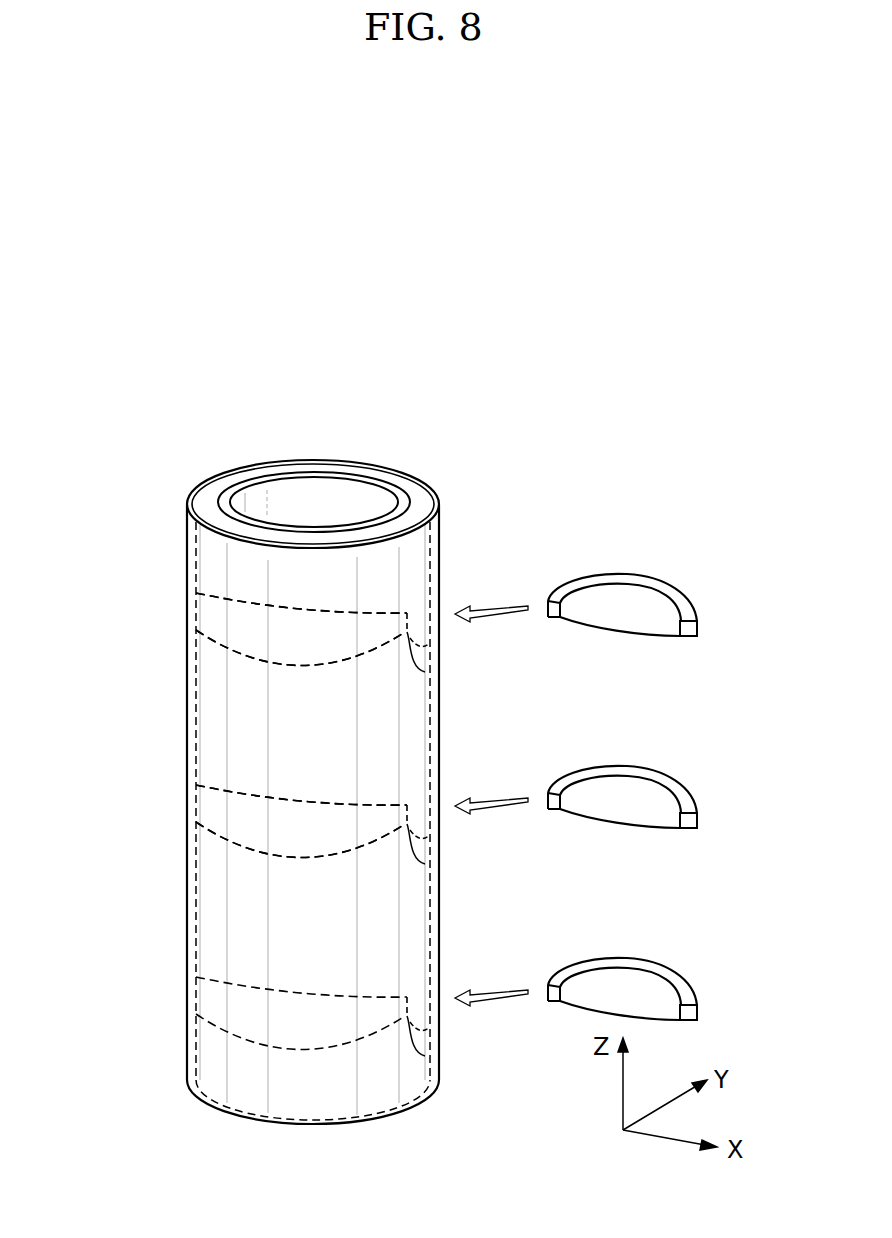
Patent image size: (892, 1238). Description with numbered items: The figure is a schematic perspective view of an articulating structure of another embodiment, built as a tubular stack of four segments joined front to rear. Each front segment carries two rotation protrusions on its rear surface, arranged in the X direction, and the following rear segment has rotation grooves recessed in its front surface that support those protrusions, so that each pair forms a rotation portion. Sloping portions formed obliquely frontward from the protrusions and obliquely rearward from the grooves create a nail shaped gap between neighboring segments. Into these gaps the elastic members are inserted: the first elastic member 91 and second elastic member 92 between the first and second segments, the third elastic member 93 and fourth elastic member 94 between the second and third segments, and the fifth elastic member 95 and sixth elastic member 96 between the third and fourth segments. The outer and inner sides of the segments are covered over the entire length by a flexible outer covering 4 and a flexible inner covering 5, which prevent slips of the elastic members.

The flexible outer covering 4 is at (441, 490).
The flexible inner covering 5 is at (372, 484).
The first elastic member 91 is at (233, 622).
The third elastic member 93 is at (262, 827).
The fifth elastic member 95 is at (262, 1019).
The second elastic member 92 is at (690, 590).
The fourth elastic member 94 is at (662, 797).
The sixth elastic member 96 is at (662, 989).